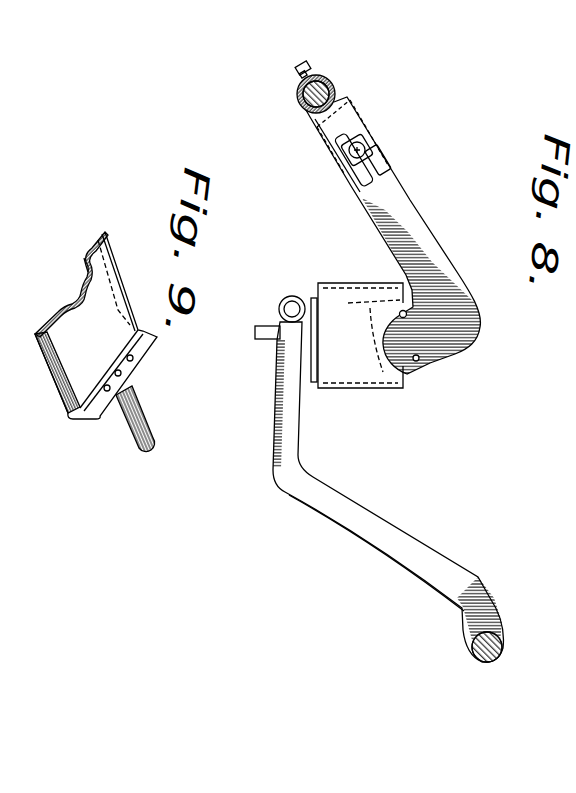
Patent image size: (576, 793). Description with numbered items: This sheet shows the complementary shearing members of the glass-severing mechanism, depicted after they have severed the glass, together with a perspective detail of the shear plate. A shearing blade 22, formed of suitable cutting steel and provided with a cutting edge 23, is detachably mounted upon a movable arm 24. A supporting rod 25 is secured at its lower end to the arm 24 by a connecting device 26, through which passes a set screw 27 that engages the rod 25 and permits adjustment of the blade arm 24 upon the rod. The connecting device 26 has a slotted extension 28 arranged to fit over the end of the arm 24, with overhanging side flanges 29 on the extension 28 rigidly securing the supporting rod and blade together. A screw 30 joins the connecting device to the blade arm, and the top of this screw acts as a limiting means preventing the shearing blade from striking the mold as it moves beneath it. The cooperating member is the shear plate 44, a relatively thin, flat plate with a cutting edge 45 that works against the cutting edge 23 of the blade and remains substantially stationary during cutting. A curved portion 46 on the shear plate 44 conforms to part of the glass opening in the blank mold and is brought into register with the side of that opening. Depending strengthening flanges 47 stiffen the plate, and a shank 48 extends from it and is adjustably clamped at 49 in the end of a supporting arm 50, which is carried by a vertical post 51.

In FIG. 8, the shearing blade 22 is at (347, 297).
In FIG. 8, the cutting edge 23 is at (383, 377).
In FIG. 8, the movable arm 24 is at (432, 236).
In FIG. 8, the supporting rod 25 is at (298, 93).
In FIG. 8, the connecting device 26 is at (358, 138).
In FIG. 8, the set screw 27 is at (300, 67).
In FIG. 8, the slotted extension 28 is at (355, 172).
In FIG. 8, the overhanging side flanges 29 is at (383, 148).
In FIG. 8, the screw 30 is at (369, 151).
In FIG. 8, the shear plate 44 is at (343, 390).
In FIG. 9, the shear plate 44 is at (108, 303).
In FIG. 8, the cutting edge 45 is at (413, 373).
In FIG. 9, the cutting edge 45 is at (79, 293).
In FIG. 8, the curved portion 46 is at (357, 335).
In FIG. 9, the curved portion 46 is at (87, 257).
In FIG. 9, the depending strengthening flanges 47 is at (105, 231).
In FIG. 9, the shank 48 is at (150, 445).
In FIG. 8, the clamp 49 is at (281, 304).
In FIG. 8, the supporting arm 50 is at (278, 428).
In FIG. 8, the vertical post 51 is at (477, 655).